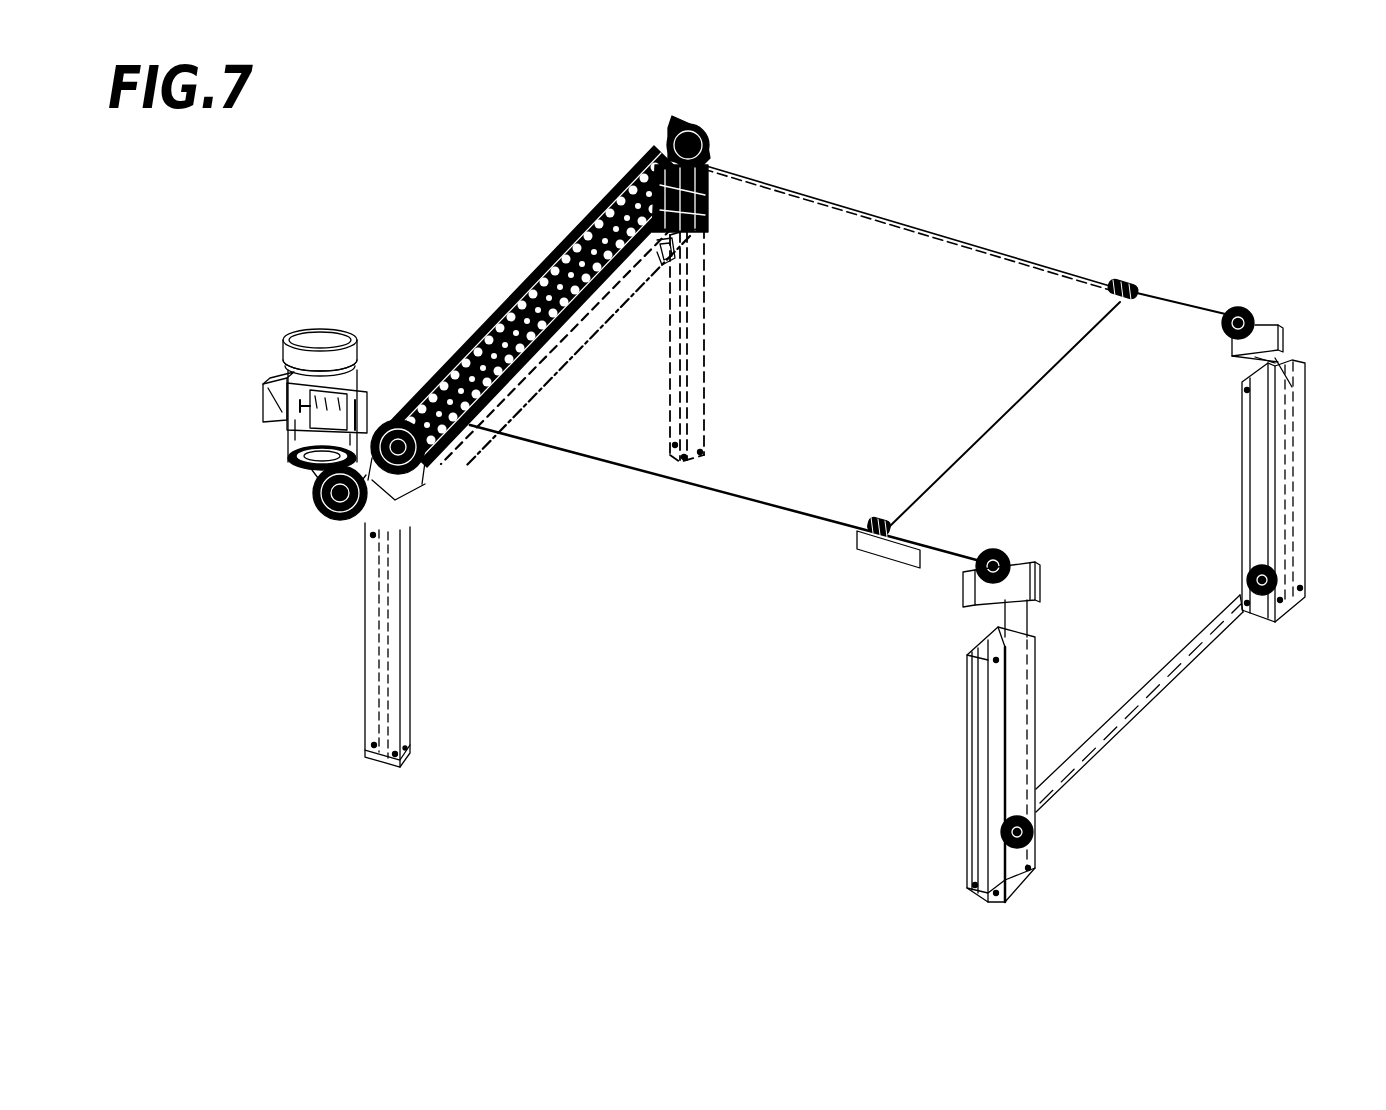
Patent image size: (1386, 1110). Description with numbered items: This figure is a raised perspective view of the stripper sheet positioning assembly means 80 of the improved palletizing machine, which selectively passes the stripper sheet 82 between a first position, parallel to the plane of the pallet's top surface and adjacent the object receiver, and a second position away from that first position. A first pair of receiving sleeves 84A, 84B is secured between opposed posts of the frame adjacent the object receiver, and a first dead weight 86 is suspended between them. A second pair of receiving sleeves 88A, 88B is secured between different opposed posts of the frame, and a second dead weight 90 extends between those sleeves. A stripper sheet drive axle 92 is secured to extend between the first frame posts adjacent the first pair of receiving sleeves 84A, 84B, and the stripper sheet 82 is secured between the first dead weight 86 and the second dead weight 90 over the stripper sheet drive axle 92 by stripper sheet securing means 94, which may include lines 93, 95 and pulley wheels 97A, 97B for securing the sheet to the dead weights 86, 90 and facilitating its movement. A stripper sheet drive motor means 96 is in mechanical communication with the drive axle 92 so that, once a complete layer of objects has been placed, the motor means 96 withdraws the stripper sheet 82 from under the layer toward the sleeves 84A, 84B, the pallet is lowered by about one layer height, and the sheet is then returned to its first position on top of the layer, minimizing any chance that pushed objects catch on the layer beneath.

The stripper sheet positioning assembly means 80 is at (1088, 100).
The stripper sheet 82 is at (753, 483).
The receiving sleeve 84A is at (377, 662).
The receiving sleeve 84B is at (706, 275).
The first dead weight 86 is at (452, 474).
The receiving sleeve 88A is at (975, 795).
The receiving sleeve 88B is at (1260, 473).
The second dead weight 90 is at (1167, 697).
The stripper sheet drive axle 92 is at (662, 154).
The line 93 is at (950, 535).
The stripper sheet securing means 94 is at (1198, 275).
The line 95 is at (1177, 300).
The stripper sheet drive motor means 96 is at (393, 360).
The pulley wheel 97A is at (1022, 545).
The pulley wheel 97B is at (1255, 318).